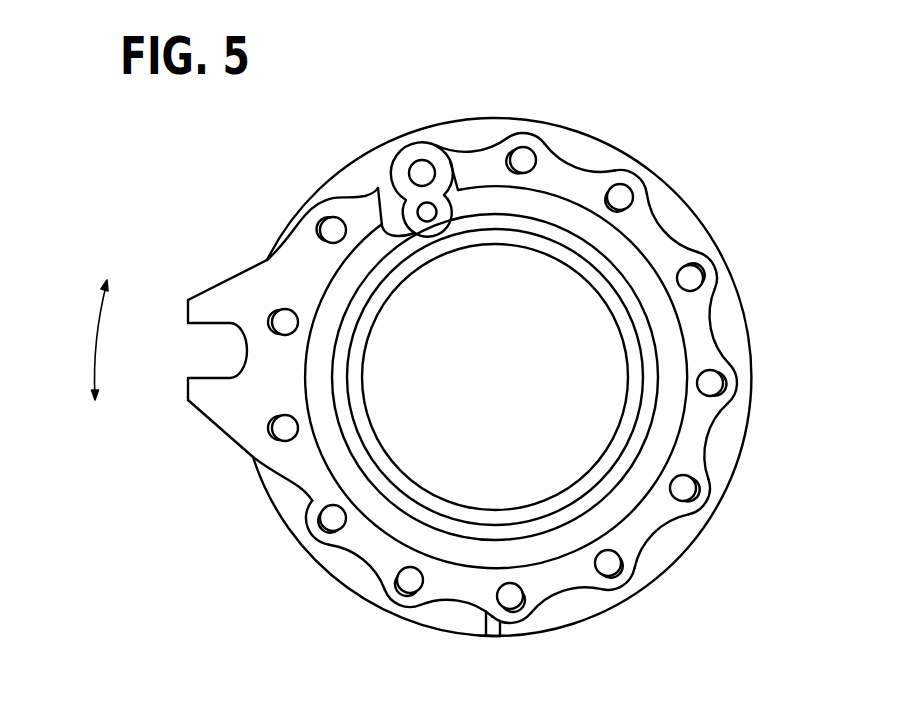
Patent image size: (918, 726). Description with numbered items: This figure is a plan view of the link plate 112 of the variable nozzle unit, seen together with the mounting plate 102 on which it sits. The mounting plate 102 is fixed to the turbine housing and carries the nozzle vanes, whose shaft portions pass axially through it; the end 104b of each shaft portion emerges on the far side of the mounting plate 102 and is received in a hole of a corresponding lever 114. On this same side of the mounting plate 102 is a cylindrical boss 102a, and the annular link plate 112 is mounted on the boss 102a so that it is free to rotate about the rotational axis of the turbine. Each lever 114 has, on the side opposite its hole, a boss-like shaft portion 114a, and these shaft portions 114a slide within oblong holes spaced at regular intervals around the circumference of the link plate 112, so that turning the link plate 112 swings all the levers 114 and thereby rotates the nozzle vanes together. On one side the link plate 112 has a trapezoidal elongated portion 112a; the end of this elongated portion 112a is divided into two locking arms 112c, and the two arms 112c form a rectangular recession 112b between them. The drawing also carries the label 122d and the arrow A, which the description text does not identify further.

The mounting plate 102 is at (680, 222).
The cylindrical boss 102a is at (667, 443).
The end of shaft portion 104b is at (417, 212).
The link plate 112 is at (573, 178).
The trapezoidal elongated portion 112a is at (267, 365).
The rectangular recession 112b is at (203, 368).
The locking arms 112c is at (213, 304).
The lever 114 is at (415, 142).
The shaft portion 114a is at (423, 167).
The projection 122d is at (527, 596).
The direction of movement A is at (96, 334).